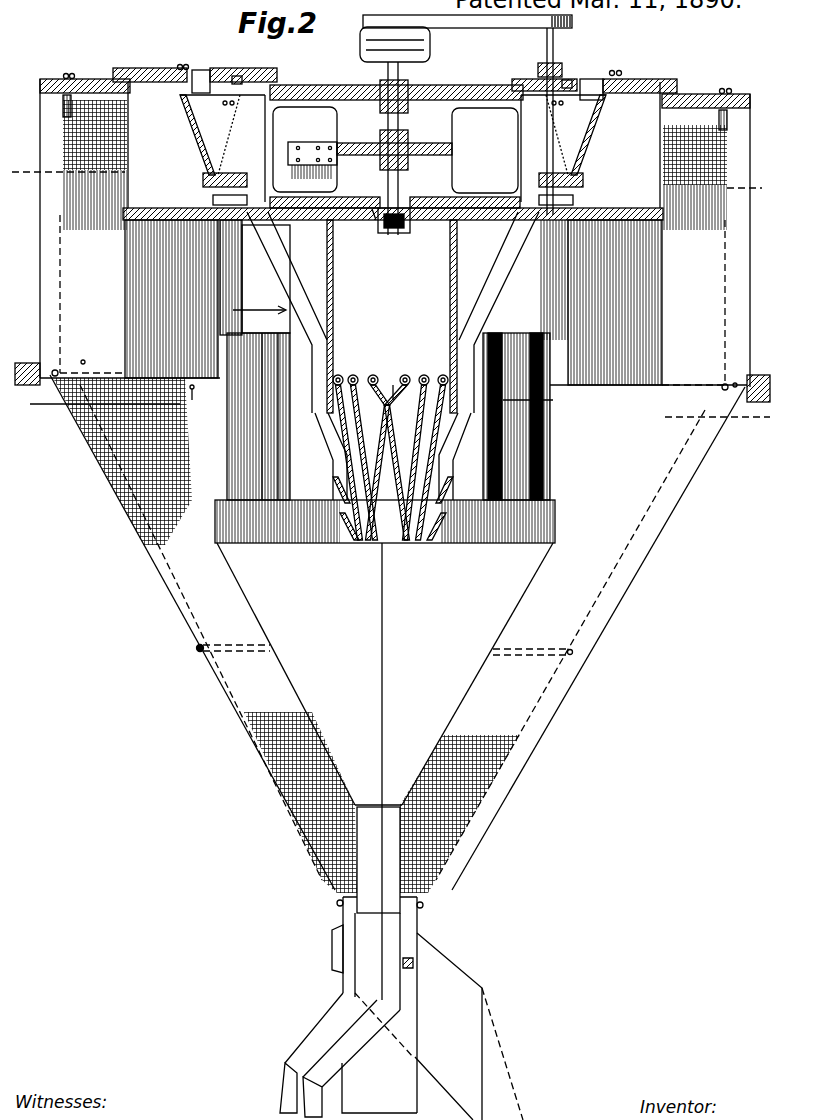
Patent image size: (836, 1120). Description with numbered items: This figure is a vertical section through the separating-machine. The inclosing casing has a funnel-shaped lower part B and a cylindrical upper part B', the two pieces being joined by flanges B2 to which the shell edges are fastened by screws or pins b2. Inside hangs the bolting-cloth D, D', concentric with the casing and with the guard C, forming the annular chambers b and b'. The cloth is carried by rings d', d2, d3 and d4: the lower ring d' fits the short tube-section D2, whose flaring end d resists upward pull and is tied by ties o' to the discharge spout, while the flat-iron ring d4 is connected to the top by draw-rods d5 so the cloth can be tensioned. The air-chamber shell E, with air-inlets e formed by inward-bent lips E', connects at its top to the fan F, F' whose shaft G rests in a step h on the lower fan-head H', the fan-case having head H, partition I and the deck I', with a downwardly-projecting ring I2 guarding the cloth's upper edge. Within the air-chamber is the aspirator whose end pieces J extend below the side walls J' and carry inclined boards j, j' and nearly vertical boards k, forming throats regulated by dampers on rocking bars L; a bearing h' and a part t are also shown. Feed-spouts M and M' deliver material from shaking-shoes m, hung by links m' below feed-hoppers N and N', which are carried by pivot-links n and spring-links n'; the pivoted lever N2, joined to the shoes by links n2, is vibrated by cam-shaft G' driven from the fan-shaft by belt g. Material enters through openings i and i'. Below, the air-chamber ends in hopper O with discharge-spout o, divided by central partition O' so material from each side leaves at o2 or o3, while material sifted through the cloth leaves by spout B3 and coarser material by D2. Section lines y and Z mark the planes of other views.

The belt g is at (452, 30).
The cam-shaft G' is at (533, 121).
The fan-shaft G is at (394, 148).
The fan-head H is at (396, 82).
The lower fan-head H' is at (395, 191).
The fan F is at (305, 149).
The fan F' is at (485, 150).
The downwardly-projecting ring or flange I2 is at (110, 78).
The opening i' is at (193, 65).
The adjustable spring-links n' is at (408, 57).
The links m' is at (413, 65).
The deck or top of the machine I' is at (594, 73).
The opening i is at (475, 227).
The adjusting-screws or draw-rods d5 is at (67, 75).
The ring d4 is at (63, 108).
The section line y is at (395, 180).
The upper part of the casing B' is at (398, 233).
The cylinder-shaped section of the bolting-cloth D' is at (393, 242).
The guard C is at (128, 285).
The annular chamber b is at (370, 299).
The annular chamber b' is at (412, 296).
The flanges B2 is at (26, 363).
The screws or pins b2 is at (413, 374).
The section line Z is at (390, 410).
The ring d3 is at (64, 382).
The discharge-spout o is at (392, 673).
The feed-hopper N' is at (222, 148).
The feed-hopper N is at (563, 148).
The pivot-links n is at (393, 128).
The shaking-shoes m is at (410, 176).
The links n2 is at (395, 198).
The step h is at (394, 237).
The bearing h' is at (365, 229).
The end pieces of the aspirator casing J is at (392, 316).
The side pieces or walls of the aspirator J' is at (476, 272).
The partition I is at (487, 237).
The feed-spout M' is at (287, 312).
The feed-spout M is at (499, 312).
The pivoted lever N2 is at (394, 280).
The shell of the air-chamber E is at (385, 384).
The flanges or lips E' is at (398, 416).
The rocking bars L is at (340, 376).
The rod t is at (384, 402).
The nearly vertically-arranged boards k is at (391, 462).
The inclined boards j is at (389, 456).
The inclined boards j' is at (387, 508).
The air-inlets e is at (550, 483).
The lower part of the casing B is at (397, 632).
The bolting-cloth D is at (379, 635).
The hopper O is at (385, 674).
The central partition O' is at (399, 771).
The ring d2 is at (198, 650).
The flaring or flanged end d is at (392, 892).
The lower ring d' is at (445, 909).
The ties o' is at (362, 949).
The short tube-section D2 is at (351, 1005).
The spout B3 is at (469, 1026).
The outlet o2 is at (288, 1088).
The outlet o3 is at (312, 1097).